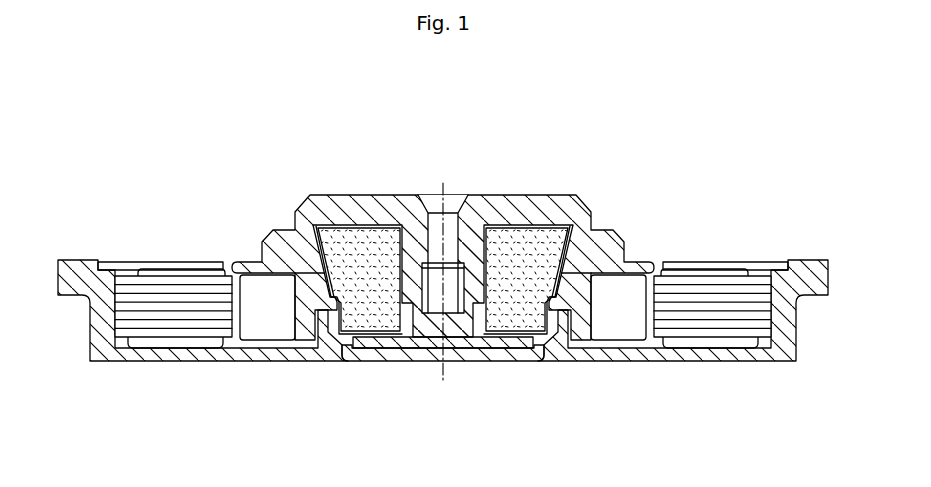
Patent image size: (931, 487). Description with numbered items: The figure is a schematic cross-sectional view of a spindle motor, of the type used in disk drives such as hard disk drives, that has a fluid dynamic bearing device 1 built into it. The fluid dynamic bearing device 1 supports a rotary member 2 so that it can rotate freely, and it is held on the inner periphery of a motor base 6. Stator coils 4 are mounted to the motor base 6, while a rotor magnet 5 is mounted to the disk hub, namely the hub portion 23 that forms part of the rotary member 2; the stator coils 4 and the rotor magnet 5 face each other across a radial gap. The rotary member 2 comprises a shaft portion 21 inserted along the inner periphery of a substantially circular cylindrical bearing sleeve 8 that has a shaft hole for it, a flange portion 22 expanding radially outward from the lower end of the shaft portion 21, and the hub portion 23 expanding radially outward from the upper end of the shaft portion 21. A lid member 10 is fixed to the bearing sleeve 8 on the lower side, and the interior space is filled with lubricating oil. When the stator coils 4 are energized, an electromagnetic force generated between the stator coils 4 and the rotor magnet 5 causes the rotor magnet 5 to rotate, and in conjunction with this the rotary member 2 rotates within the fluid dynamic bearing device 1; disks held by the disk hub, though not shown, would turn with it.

The fluid dynamic bearing device 1 is at (443, 263).
The rotary member 2 is at (461, 181).
The stator coils 4 is at (753, 278).
The rotor magnet 5 is at (635, 286).
The motor base 6 is at (199, 363).
The bearing sleeve 8 is at (371, 246).
The lid member 10 is at (407, 363).
The shaft portion 21 is at (481, 294).
The flange portion 22 is at (459, 341).
The hub portion 23 is at (516, 205).